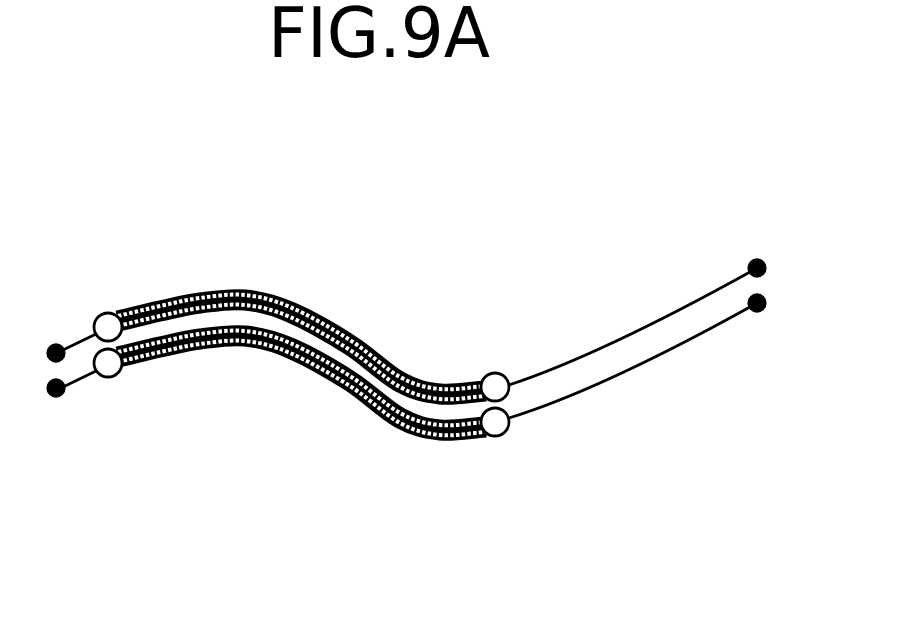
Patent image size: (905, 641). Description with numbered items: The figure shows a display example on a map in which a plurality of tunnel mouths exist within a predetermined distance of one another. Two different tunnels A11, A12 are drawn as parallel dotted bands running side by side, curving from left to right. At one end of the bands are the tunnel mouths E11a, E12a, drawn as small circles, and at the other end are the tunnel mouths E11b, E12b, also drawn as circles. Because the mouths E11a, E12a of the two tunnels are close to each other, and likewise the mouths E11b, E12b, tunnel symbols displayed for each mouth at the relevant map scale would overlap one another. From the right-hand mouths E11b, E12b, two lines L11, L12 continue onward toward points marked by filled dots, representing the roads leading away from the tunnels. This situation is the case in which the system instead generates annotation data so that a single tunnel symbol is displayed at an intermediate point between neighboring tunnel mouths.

The tunnel A11 is at (267, 291).
The tunnel A12 is at (263, 353).
The tunnel mouth E11a is at (110, 313).
The tunnel mouth E12a is at (108, 377).
The tunnel mouth E11b is at (495, 373).
The tunnel mouth E12b is at (490, 436).
The first lead line L11 is at (620, 337).
The second lead line L12 is at (610, 386).